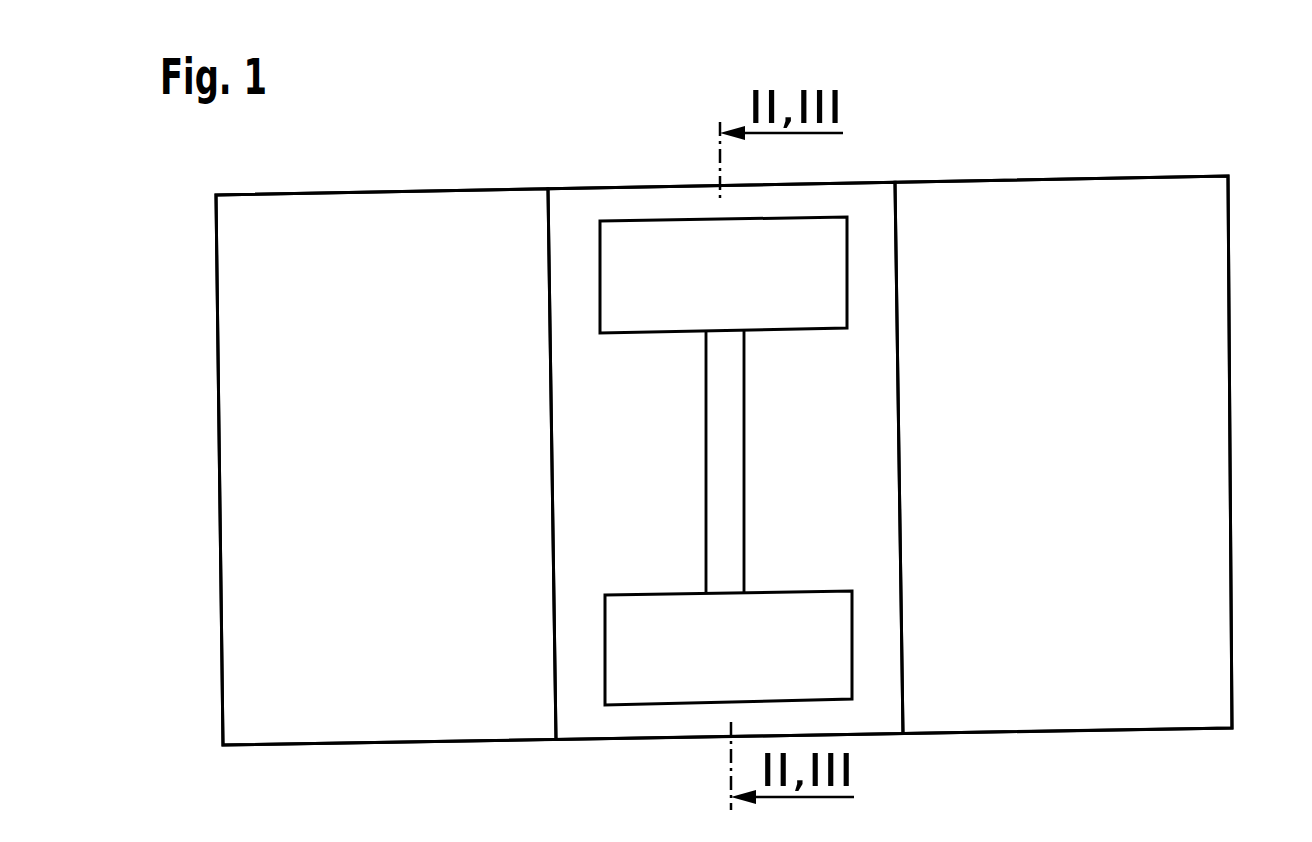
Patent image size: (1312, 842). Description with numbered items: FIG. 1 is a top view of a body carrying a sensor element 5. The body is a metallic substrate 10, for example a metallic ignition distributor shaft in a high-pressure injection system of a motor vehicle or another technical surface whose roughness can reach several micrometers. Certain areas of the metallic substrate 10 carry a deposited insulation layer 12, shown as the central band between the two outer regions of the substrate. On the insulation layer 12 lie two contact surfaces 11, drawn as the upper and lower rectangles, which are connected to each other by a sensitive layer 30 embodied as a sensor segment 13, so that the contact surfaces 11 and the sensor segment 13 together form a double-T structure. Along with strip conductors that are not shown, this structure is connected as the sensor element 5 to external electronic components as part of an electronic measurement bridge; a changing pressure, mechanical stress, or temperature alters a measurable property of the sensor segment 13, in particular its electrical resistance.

The sensor element 5 is at (585, 118).
The metallic substrate 10 is at (238, 388).
The contact surfaces 11 is at (797, 317).
The insulation layer 12 is at (880, 457).
The sensor segment 13 is at (722, 443).
The sensitive layer 30 is at (722, 443).